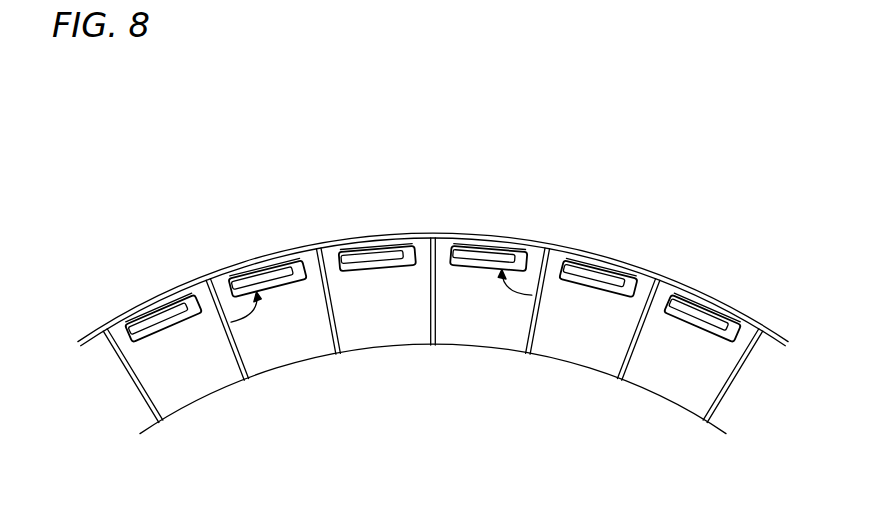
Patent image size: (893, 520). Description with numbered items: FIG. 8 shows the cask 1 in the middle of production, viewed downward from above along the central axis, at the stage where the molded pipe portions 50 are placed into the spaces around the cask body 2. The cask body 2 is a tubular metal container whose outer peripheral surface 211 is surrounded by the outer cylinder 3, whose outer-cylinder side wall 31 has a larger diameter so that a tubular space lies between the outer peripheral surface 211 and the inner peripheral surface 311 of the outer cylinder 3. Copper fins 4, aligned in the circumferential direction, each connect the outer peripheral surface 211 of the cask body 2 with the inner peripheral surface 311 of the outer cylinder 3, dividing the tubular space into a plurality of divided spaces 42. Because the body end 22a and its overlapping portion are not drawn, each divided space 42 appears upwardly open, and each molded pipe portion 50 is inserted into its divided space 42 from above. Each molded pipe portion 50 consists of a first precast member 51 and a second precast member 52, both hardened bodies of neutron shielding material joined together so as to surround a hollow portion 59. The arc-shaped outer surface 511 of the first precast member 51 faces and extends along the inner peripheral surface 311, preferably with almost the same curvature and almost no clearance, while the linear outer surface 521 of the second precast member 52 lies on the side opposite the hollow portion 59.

The cask 1 is at (322, 105).
The cask body 2 is at (742, 320).
The outer cylinder 3 is at (665, 192).
The fin 4 is at (234, 347).
The body end 22a is at (655, 437).
The outer-cylinder side wall 31 is at (630, 420).
The divided space 42 is at (192, 368).
The molded pipe portion 50 is at (433, 223).
The first precast member 51 is at (238, 264).
The second precast member 52 is at (287, 267).
The hollow portion 59 is at (270, 272).
The outer peripheral surface 211 is at (172, 408).
The inner peripheral surface 311 is at (124, 330).
The outer surface 511 is at (238, 263).
The outer surface 521 is at (200, 302).